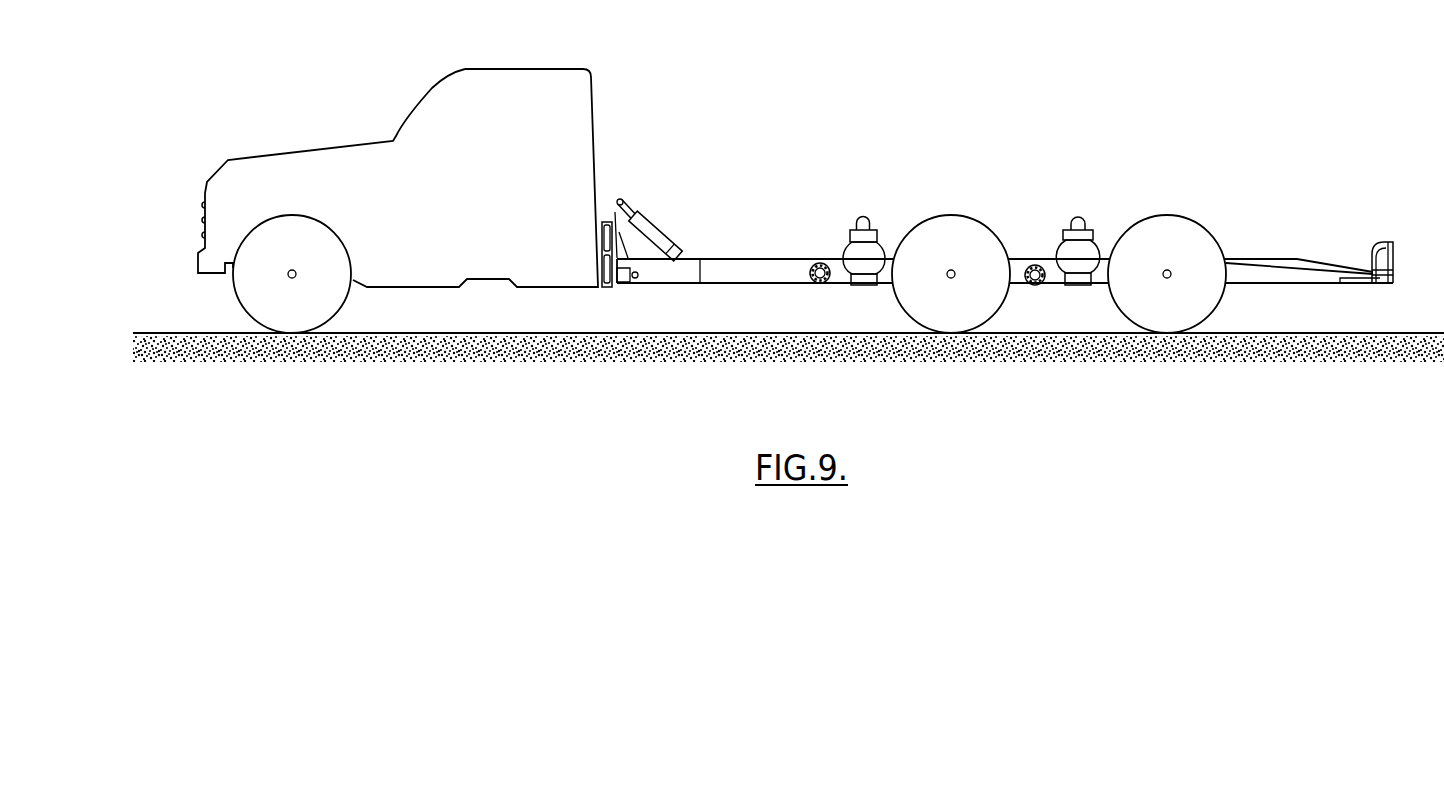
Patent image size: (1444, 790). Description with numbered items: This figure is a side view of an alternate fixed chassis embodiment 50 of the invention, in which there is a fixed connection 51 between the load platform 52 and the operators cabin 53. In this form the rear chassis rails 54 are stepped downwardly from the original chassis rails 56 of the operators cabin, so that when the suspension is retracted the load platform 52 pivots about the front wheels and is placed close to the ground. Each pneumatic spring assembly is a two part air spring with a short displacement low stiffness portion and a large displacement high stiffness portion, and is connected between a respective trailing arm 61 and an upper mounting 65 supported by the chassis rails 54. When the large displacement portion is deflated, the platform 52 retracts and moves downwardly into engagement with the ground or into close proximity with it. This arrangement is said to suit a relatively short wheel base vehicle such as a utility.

The embodiment 50 is at (840, 212).
The fixed connection 51 is at (586, 344).
The load platform 52 is at (718, 246).
The operators cabin 53 is at (523, 202).
The rear chassis rails 54 is at (747, 273).
The original chassis rails 56 is at (440, 287).
The trailing arm 61 is at (840, 275).
The upper mounting 65 is at (862, 216).